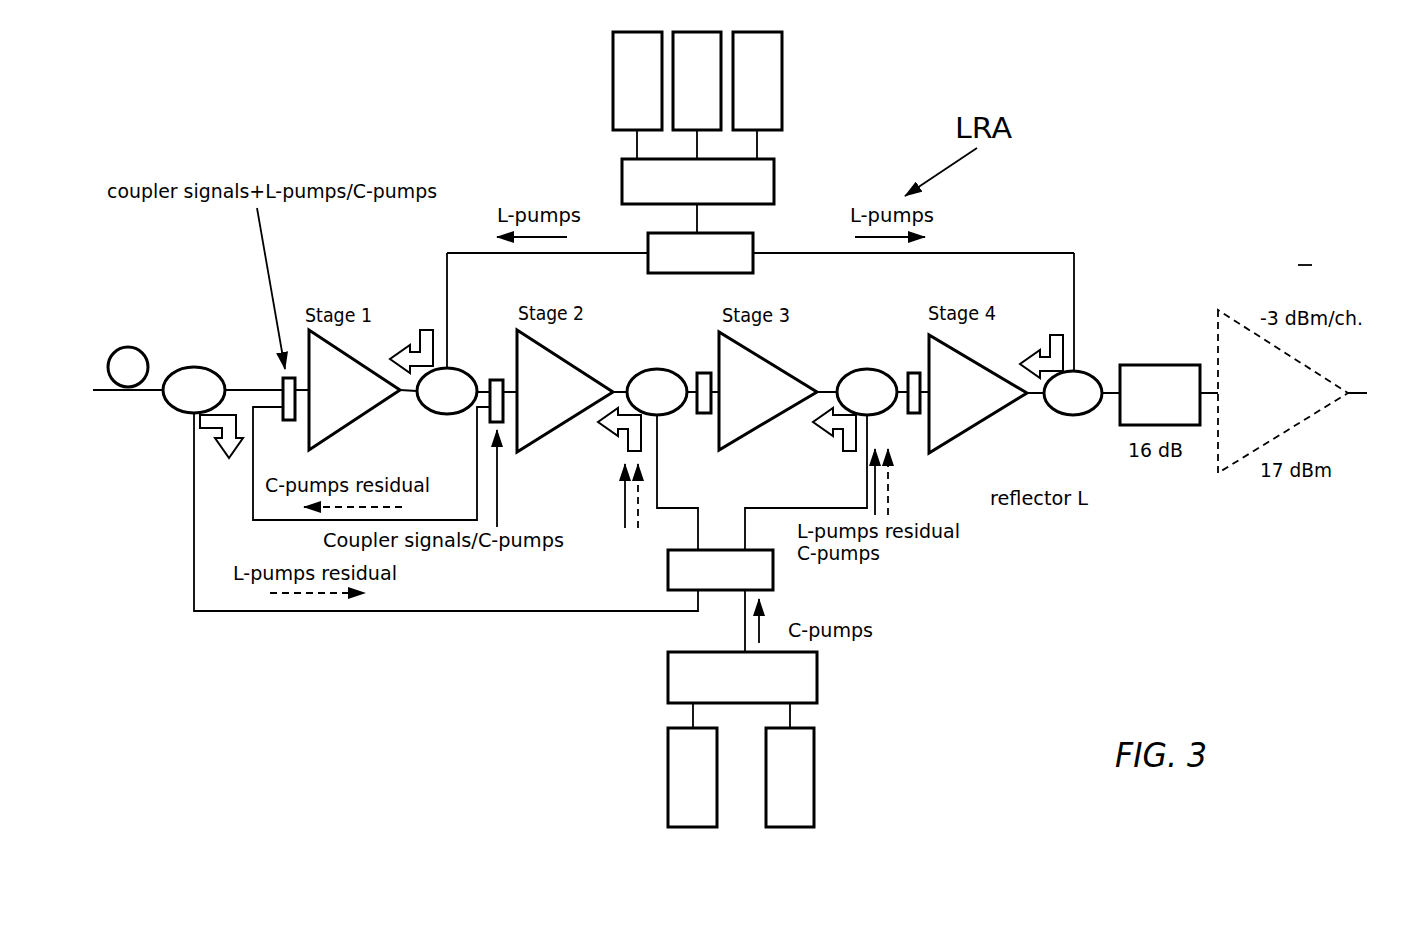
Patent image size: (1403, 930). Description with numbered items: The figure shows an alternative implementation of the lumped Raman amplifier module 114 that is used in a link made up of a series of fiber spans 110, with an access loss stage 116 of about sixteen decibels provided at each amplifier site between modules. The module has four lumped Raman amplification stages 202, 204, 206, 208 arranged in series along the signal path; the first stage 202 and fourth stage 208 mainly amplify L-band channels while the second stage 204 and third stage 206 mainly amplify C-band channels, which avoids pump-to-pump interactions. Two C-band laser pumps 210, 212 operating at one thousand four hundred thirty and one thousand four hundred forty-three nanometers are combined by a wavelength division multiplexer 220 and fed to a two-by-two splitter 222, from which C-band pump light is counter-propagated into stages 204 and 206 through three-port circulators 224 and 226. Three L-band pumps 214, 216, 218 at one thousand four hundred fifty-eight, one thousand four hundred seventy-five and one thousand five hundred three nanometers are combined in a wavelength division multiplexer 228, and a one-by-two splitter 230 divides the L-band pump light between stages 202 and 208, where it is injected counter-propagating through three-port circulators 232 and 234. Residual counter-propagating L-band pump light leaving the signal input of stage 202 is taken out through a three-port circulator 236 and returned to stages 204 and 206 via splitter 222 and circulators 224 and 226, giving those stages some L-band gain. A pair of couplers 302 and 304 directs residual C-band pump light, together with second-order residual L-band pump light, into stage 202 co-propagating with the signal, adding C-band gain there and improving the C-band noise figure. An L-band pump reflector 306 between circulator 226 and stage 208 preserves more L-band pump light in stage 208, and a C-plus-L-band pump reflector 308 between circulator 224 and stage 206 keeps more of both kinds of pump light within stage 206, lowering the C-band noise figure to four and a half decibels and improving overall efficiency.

The fiber span 110 is at (132, 347).
The lumped Raman amplifier module 114 is at (1233, 320).
The access loss stage 116 is at (1137, 365).
The lumped Raman amplification stage 202 is at (355, 421).
The lumped Raman amplification stage 204 is at (569, 362).
The lumped Raman amplification stage 206 is at (755, 430).
The lumped Raman amplification stage 208 is at (952, 441).
The laser pump 210 is at (668, 755).
The laser pump 212 is at (814, 760).
The pump 214 is at (630, 32).
The pump 216 is at (702, 32).
The pump 218 is at (767, 32).
The wavelength division multiplexer 220 is at (818, 665).
The 2x2 splitter 222 is at (668, 567).
The 3-port circulator 224 is at (657, 369).
The 3-port circulator 226 is at (866, 368).
The wavelength division multiplexer 228 is at (777, 168).
The 1x2 splitter 230 is at (755, 241).
The three-port circulator 232 is at (447, 415).
The three-port circulator 234 is at (1083, 372).
The 3-port circulator 236 is at (173, 408).
The coupler 302 is at (495, 380).
The coupler 304 is at (283, 376).
The L-band pump reflector 306 is at (913, 418).
The C+L-band pump reflector 308 is at (703, 413).